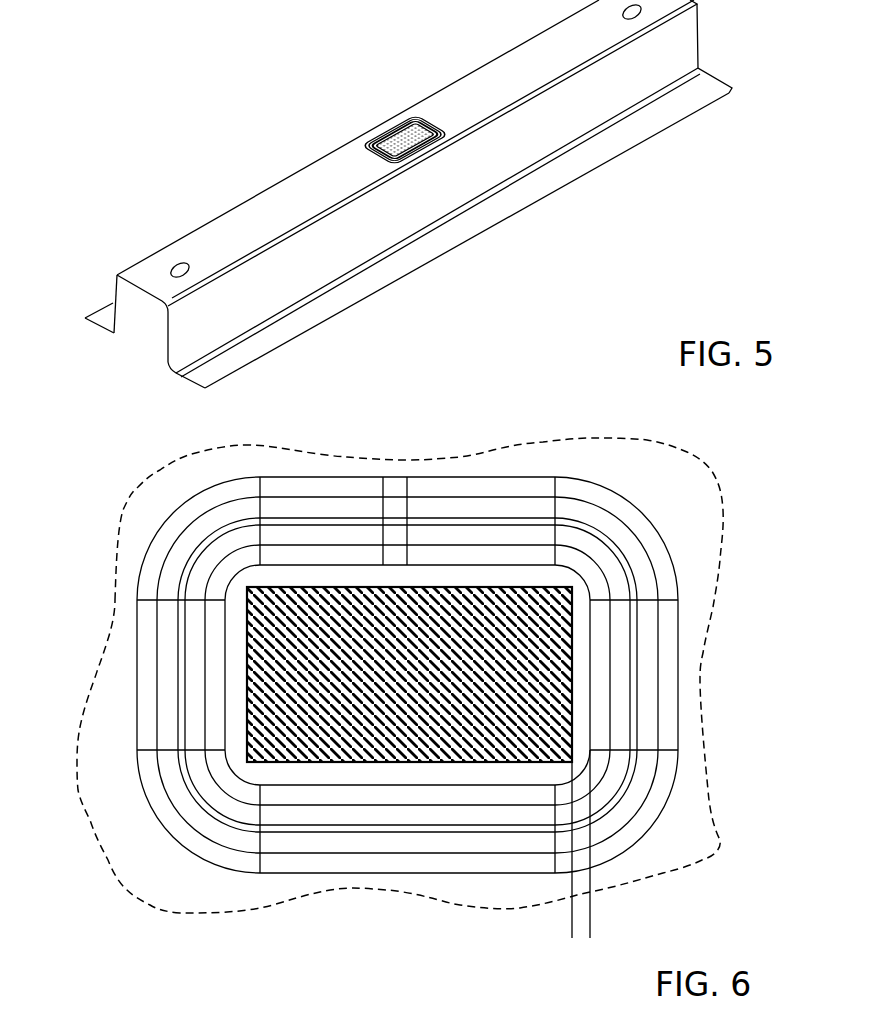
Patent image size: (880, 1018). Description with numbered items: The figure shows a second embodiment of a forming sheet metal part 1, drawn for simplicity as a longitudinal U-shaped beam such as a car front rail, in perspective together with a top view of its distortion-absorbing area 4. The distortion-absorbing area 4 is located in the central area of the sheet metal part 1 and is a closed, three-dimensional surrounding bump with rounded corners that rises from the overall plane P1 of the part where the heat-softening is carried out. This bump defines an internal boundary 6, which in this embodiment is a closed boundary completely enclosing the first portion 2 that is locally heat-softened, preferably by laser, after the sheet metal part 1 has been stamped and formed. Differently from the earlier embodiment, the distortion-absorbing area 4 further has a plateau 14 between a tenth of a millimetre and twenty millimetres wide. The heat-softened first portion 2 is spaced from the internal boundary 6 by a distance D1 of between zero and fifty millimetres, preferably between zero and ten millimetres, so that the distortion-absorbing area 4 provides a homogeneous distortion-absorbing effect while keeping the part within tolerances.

In FIG. 5, the sheet metal part 1 is at (305, 122).
In FIG. 5, the first portion 2 is at (422, 133).
In FIG. 6, the first portion 2 is at (467, 620).
In FIG. 5, the distortion-absorbing area 4 is at (393, 127).
In FIG. 6, the distortion-absorbing area 4 is at (433, 653).
In FIG. 6, the internal boundary 6 is at (388, 564).
In FIG. 6, the plateau 14 is at (353, 828).
In FIG. 6, the overall plane P1 is at (700, 488).
In FIG. 6, the distance D1 is at (533, 929).